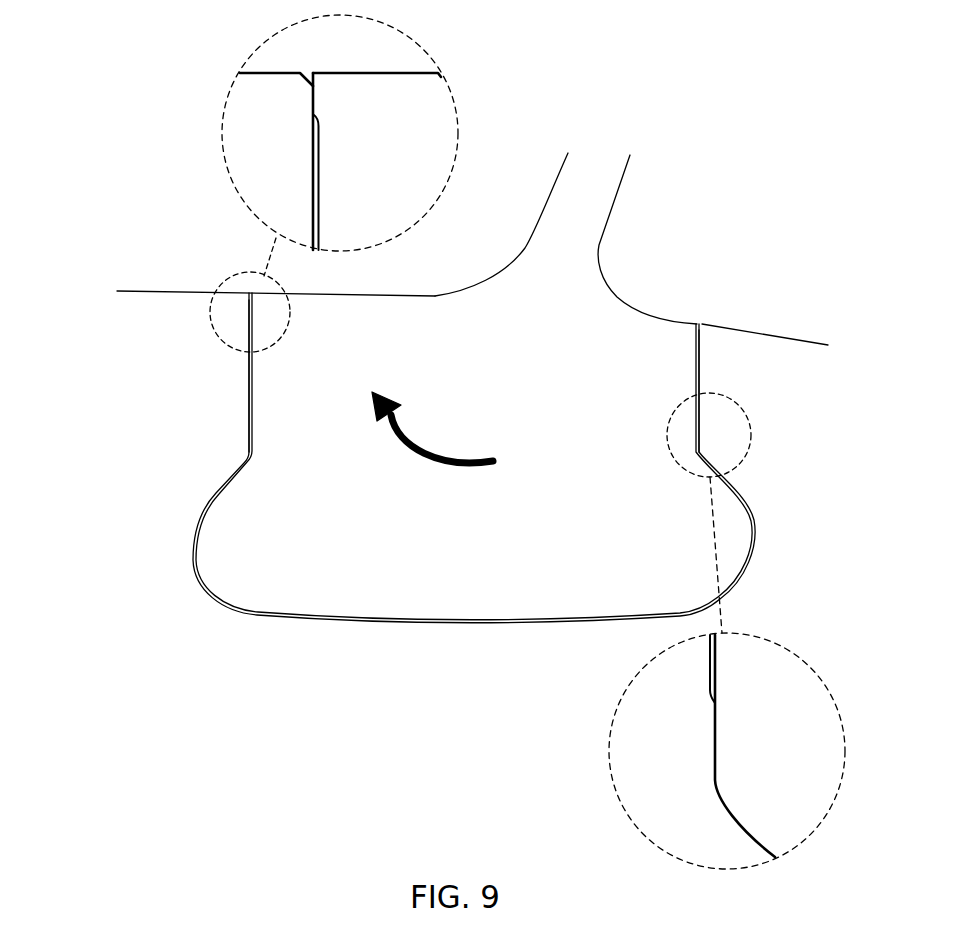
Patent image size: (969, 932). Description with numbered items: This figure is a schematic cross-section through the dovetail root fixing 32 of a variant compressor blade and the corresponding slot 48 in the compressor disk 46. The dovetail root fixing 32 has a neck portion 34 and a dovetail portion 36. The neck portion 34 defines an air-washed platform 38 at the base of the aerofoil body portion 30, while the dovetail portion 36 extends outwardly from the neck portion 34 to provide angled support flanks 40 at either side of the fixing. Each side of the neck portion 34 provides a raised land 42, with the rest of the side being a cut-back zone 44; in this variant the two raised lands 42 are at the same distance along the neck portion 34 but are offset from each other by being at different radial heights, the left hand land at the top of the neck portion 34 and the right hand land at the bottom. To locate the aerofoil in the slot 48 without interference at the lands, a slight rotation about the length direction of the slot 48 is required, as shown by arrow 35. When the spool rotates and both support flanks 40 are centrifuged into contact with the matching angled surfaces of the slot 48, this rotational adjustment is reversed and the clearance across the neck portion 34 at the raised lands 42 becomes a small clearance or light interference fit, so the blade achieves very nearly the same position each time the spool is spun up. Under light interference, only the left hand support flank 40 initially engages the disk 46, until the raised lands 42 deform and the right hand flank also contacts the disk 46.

The aerofoil body portion 30 is at (596, 214).
The dovetail root fixing 32 is at (147, 457).
The neck portion 34 is at (379, 362).
The arrow 35 is at (422, 448).
The dovetail portion 36 is at (495, 547).
The air-washed platform 38 is at (368, 292).
The support flanks 40 is at (218, 487).
The raised land 42 is at (315, 92).
The cut-back zone 44 is at (322, 223).
The disk 46 is at (496, 706).
The slot 48 is at (738, 580).